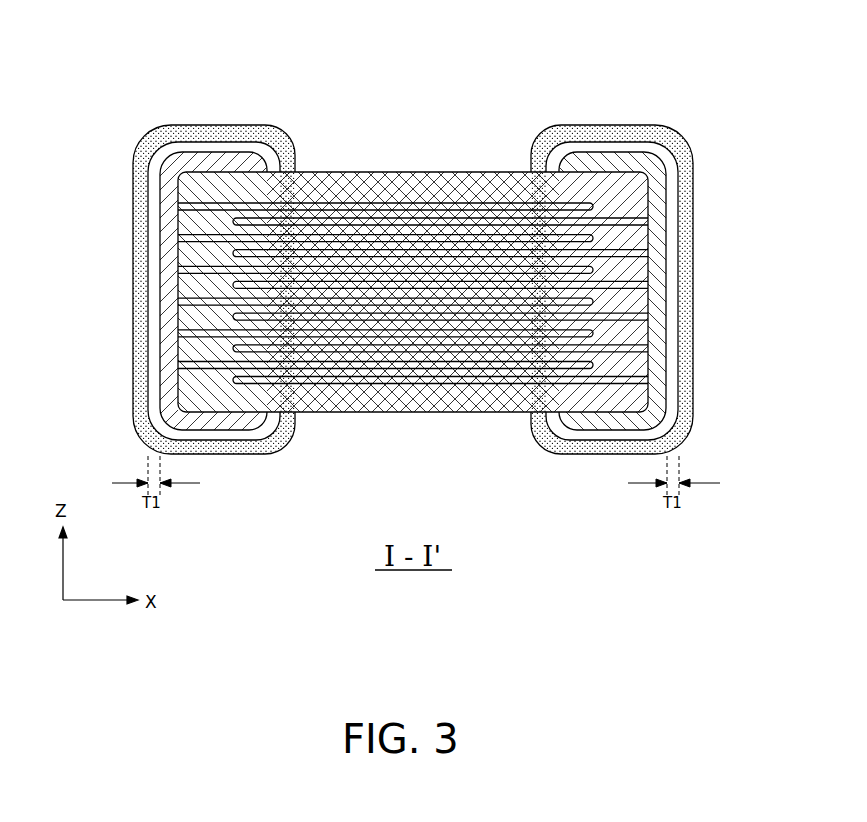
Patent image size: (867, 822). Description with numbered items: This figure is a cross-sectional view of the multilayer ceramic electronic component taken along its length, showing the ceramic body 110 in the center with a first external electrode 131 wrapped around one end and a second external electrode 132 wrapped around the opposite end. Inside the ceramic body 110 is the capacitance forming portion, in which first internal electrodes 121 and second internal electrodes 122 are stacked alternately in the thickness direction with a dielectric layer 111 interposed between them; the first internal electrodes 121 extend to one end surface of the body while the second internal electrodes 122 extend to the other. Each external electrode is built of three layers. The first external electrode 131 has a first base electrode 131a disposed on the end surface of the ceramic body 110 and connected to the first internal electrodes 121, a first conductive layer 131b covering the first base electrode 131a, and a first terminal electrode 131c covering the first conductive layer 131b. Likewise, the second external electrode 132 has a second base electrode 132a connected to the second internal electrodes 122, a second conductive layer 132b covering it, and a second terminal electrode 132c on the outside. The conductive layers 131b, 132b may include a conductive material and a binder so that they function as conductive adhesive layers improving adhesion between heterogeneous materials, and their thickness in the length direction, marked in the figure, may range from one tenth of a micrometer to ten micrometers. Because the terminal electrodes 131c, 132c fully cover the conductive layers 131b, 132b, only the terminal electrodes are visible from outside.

The ceramic body 110 is at (385, 172).
The dielectric layer 111 is at (197, 228).
The first internal electrode 121 is at (300, 203).
The second internal electrode 122 is at (245, 223).
The first external electrode 131 is at (242, 49).
The first base electrode 131a is at (218, 152).
The first conductive layer 131b is at (168, 150).
The first terminal electrode 131c is at (140, 153).
The second external electrode 132 is at (585, 49).
The second base electrode 132a is at (606, 152).
The second conductive layer 132b is at (662, 148).
The second terminal electrode 132c is at (702, 147).